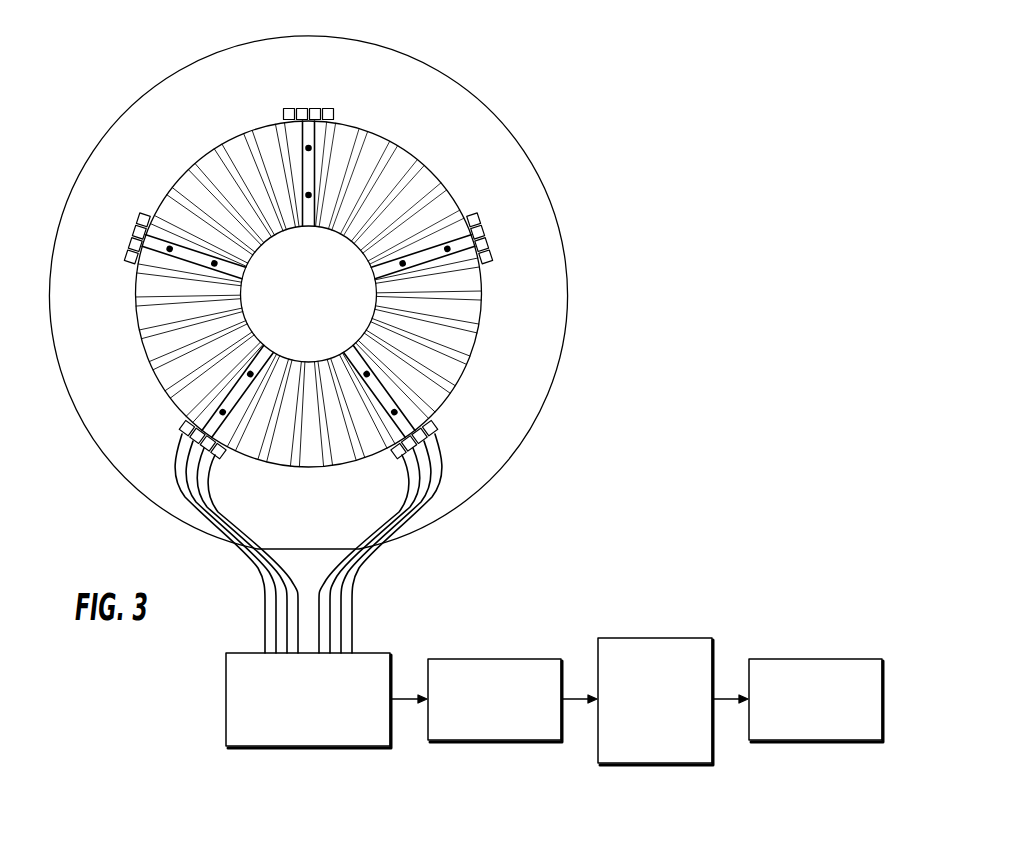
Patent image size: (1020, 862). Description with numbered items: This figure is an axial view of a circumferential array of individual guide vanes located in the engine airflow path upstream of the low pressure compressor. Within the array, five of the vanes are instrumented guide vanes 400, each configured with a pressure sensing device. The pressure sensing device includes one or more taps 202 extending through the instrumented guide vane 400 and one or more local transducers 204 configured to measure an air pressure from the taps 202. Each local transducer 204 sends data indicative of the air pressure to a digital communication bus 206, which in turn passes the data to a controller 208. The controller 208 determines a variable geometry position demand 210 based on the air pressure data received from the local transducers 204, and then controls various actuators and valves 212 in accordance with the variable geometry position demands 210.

The taps 202 is at (399, 252).
The local transducers 204 is at (444, 425).
The digital communication bus 206 is at (226, 708).
The controller 208 is at (490, 659).
The variable geometry position demand 210 is at (655, 638).
The actuators and valves 212 is at (815, 659).
The instrumented guide vane 400 is at (183, 267).